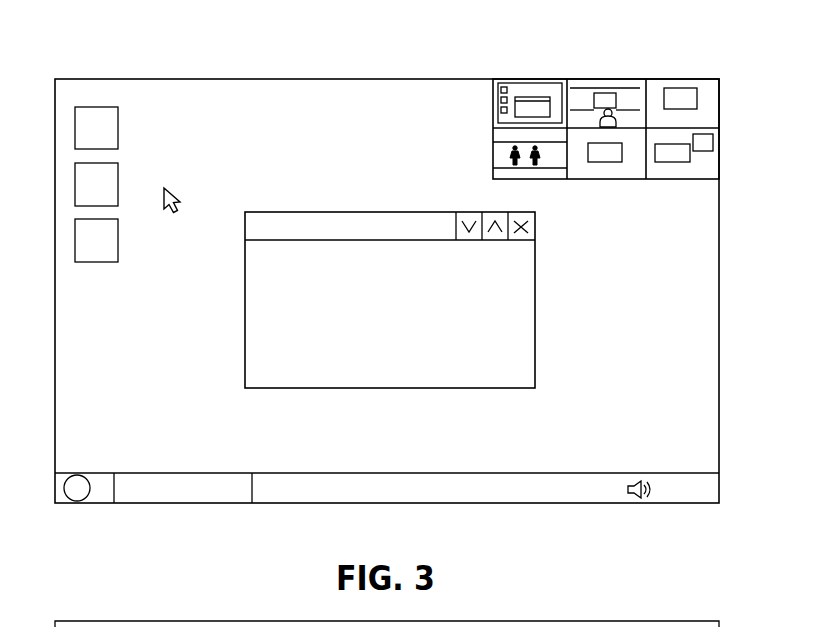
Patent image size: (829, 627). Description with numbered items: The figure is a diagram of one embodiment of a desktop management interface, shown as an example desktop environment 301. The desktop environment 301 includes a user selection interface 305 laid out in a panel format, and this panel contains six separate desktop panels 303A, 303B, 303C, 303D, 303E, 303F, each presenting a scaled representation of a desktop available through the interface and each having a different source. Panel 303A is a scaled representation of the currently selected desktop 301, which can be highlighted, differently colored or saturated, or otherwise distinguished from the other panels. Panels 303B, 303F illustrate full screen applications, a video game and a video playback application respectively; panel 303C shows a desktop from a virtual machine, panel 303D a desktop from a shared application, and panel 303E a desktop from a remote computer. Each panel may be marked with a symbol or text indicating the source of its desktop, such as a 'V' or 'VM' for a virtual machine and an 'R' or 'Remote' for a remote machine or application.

The desktop environment 301 is at (700, 331).
The user selection interface 305 is at (476, 127).
The desktop panel 303A is at (535, 82).
The desktop panel 303B is at (607, 82).
The desktop panel 303C is at (678, 82).
The desktop panel 303D is at (692, 177).
The desktop panel 303E is at (615, 177).
The desktop panel 303F is at (508, 177).